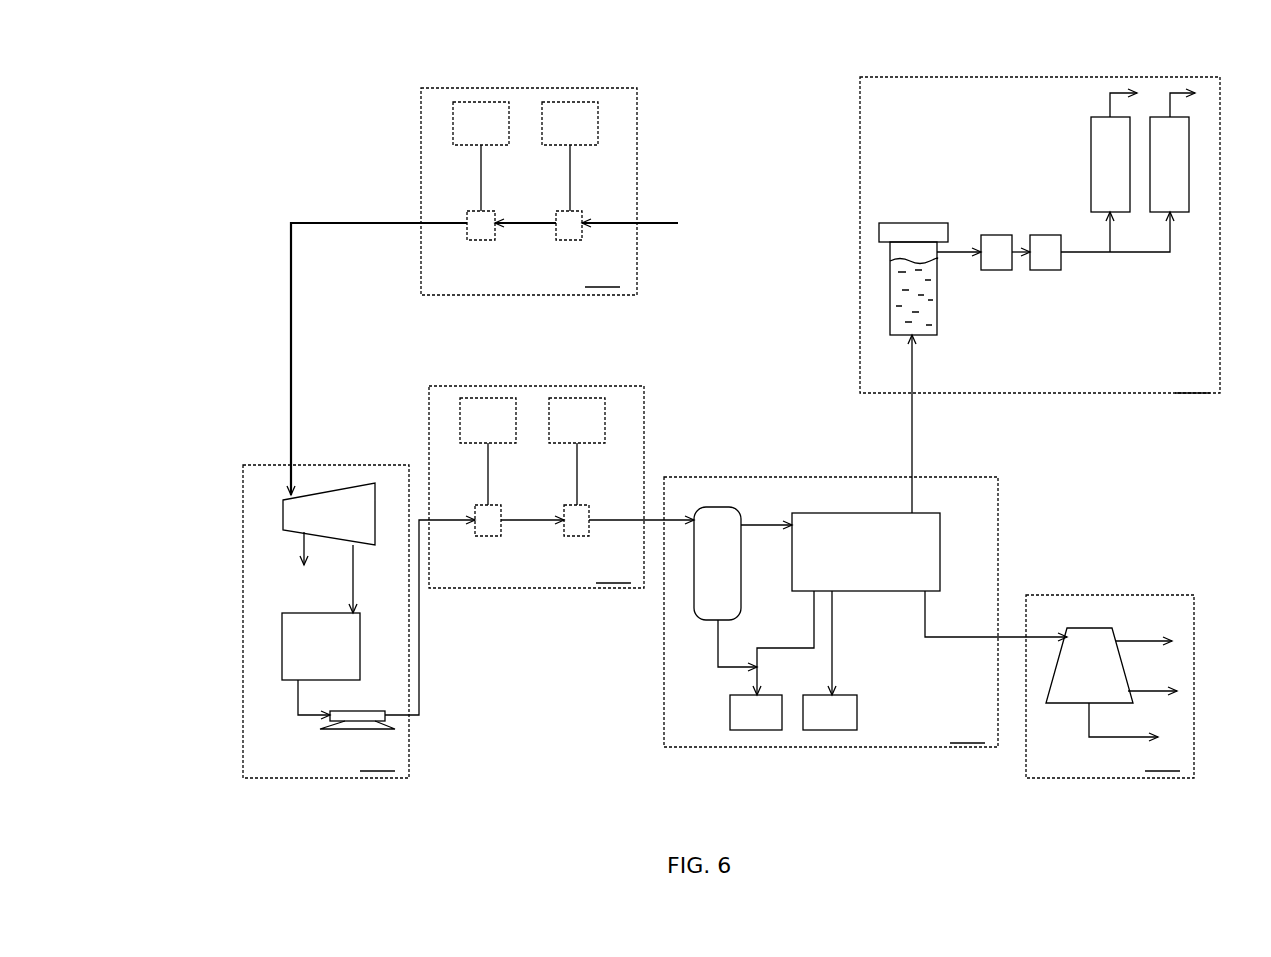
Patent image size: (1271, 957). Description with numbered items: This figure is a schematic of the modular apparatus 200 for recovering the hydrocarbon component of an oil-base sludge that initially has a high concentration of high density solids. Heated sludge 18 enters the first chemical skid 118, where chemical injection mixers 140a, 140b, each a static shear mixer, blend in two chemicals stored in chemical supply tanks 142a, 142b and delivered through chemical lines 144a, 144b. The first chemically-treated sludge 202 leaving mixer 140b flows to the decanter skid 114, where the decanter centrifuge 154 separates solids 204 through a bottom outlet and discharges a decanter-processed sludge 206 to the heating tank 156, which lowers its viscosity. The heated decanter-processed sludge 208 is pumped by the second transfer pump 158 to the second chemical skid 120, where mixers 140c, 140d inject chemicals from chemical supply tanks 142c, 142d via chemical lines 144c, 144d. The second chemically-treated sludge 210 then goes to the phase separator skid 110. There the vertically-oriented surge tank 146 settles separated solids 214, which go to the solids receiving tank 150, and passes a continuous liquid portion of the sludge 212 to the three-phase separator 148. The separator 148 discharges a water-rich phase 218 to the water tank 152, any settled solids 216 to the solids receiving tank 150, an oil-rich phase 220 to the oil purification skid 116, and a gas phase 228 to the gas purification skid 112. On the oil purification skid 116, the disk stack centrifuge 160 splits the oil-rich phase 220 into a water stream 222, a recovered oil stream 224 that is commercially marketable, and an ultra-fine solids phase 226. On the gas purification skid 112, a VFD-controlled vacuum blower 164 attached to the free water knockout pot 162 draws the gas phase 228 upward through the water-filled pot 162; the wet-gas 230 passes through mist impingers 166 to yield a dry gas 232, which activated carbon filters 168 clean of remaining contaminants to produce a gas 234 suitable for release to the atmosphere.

The heated sludge 18 is at (648, 223).
The phase separator skid 110 is at (831, 612).
The gas purification skid 112 is at (1040, 235).
The decanter skid 114 is at (326, 621).
The oil purification skid 116 is at (1110, 686).
The first chemical skid 118 is at (529, 191).
The second chemical skid 120 is at (536, 487).
The chemical injection mixer 140a is at (554, 219).
The chemical injection mixer 140b is at (465, 219).
The chemical injection mixer 140c is at (473, 516).
The chemical injection mixer 140d is at (562, 516).
The chemical supply tank 142a is at (593, 140).
The chemical supply tank 142b is at (504, 140).
The chemical supply tank 142c is at (511, 436).
The chemical supply tank 142d is at (600, 436).
The chemical line 144a is at (572, 191).
The chemical line 144b is at (482, 191).
The chemical line 144c is at (490, 486).
The chemical line 144d is at (579, 486).
The surge tank 146 is at (735, 575).
The three-phase separator 148 is at (884, 561).
The solids receiving tank 150 is at (774, 724).
The water tank 152 is at (848, 724).
The decanter centrifuge 154 is at (348, 526).
The heating tank 156 is at (339, 657).
The second transfer pump 158 is at (340, 729).
The disk stack centrifuge 160 is at (1108, 675).
The free water knockout pot 162 is at (938, 323).
The VFD-controlled vacuum blower 164 is at (920, 232).
The mist impinger 166 is at (1052, 234).
The activated carbon filter 168 is at (1128, 176).
The modular apparatus 200 is at (322, 106).
The first chemically-treated sludge 202 is at (358, 222).
The solids 204 is at (302, 553).
The decanter-processed sludge 206 is at (355, 578).
The heated decanter-processed sludge 208 is at (298, 709).
The second chemically-treated sludge 210 is at (642, 518).
The liquid portion of the sludge 212 is at (780, 522).
The separated solids 214 is at (715, 651).
The solids 216 is at (812, 616).
The water-rich phase 218 is at (835, 641).
The oil-rich phase 220 is at (982, 636).
The water stream 222 is at (1158, 640).
The recovered oil stream 224 is at (1138, 690).
The ultra-fine solids phase 226 is at (1130, 736).
The gas phase 228 is at (910, 440).
The wet-gas 230 is at (940, 256).
The dry gas 232 is at (1105, 254).
The gas 234 is at (1112, 89).